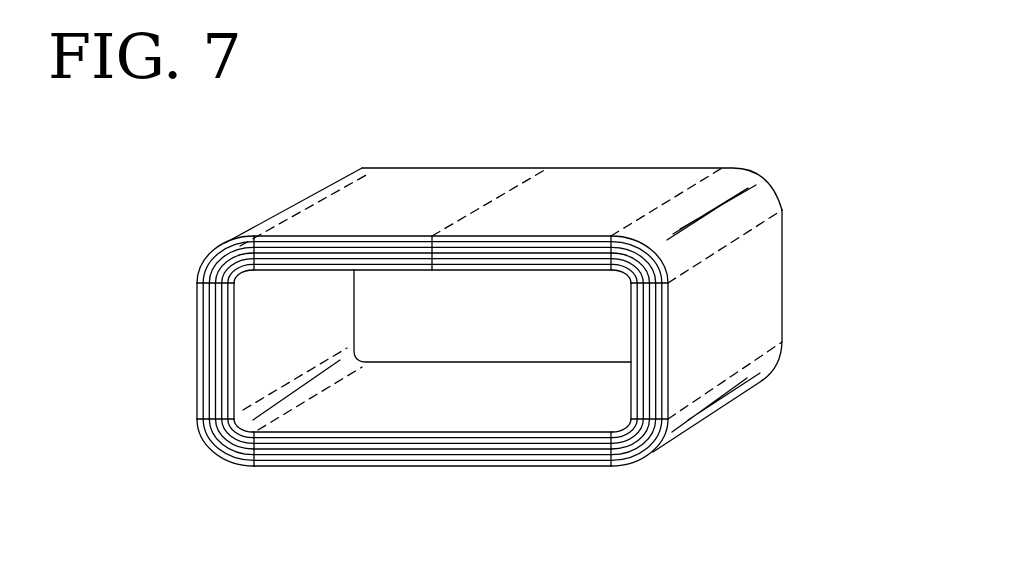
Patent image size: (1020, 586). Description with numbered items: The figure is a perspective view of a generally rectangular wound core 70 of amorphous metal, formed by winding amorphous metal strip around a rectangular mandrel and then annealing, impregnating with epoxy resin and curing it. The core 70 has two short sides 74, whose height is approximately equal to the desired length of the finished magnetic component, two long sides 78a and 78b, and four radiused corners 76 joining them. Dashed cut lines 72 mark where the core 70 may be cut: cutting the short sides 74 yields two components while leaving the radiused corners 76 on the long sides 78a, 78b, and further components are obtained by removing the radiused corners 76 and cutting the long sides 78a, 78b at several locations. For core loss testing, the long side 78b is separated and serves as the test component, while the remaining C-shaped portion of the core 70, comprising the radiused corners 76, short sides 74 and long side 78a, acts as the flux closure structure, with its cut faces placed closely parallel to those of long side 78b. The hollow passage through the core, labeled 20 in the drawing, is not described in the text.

The wound core 70 is at (158, 198).
The cut lines 72 is at (323, 200).
The short sides 74 is at (196, 352).
The radiused corners 76 is at (760, 202).
The long side 78a is at (432, 180).
The long side 78b is at (460, 450).
The passage 20 is at (479, 268).